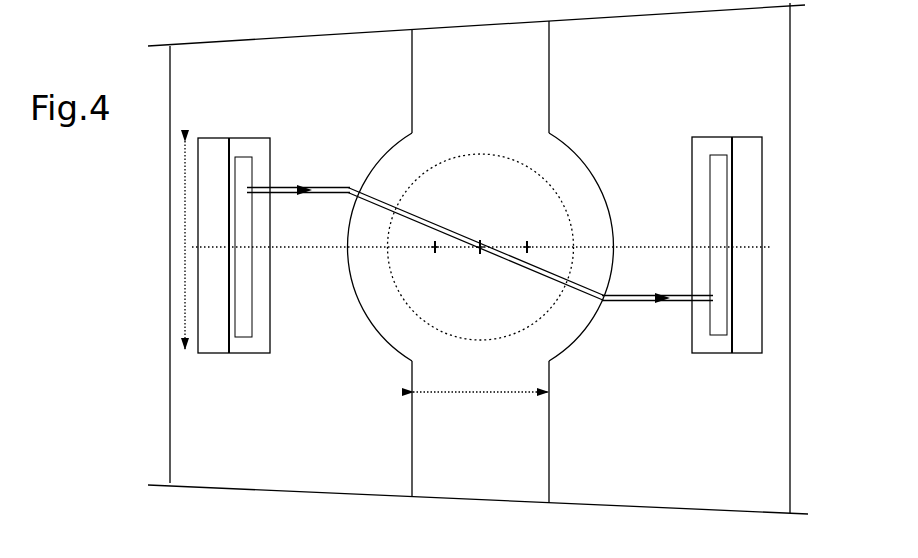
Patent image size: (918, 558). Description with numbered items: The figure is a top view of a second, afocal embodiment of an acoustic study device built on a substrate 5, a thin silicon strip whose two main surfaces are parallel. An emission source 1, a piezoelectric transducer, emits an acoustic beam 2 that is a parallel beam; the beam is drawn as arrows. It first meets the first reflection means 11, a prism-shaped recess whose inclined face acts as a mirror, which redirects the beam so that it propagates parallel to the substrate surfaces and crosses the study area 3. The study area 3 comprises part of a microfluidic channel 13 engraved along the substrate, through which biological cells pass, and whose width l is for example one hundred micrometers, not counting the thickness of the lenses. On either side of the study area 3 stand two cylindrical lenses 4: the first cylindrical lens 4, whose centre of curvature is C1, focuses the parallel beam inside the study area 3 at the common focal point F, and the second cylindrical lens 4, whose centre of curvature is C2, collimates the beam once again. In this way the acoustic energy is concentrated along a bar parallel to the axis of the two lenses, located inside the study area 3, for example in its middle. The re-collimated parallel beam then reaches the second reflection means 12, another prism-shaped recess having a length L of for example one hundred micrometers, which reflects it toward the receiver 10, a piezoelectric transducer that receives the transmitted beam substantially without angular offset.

The emission source 1 is at (243, 320).
The acoustic beam 2 is at (282, 187).
The study area 3 is at (478, 154).
The cylindrical lens 4 is at (404, 138).
The substrate 5 is at (782, 105).
The receiver 10 is at (718, 335).
The first reflection means 11 is at (220, 177).
The second reflection means 12 is at (741, 170).
The microfluidic channel 13 is at (412, 50).
The common focal point F is at (479, 236).
The centre of curvature of the first cylindrical lens C1 is at (429, 263).
The centre of curvature of the second cylindrical lens C2 is at (521, 235).
The length of the prism L is at (176, 262).
The width of the microfluidic channel l is at (470, 392).